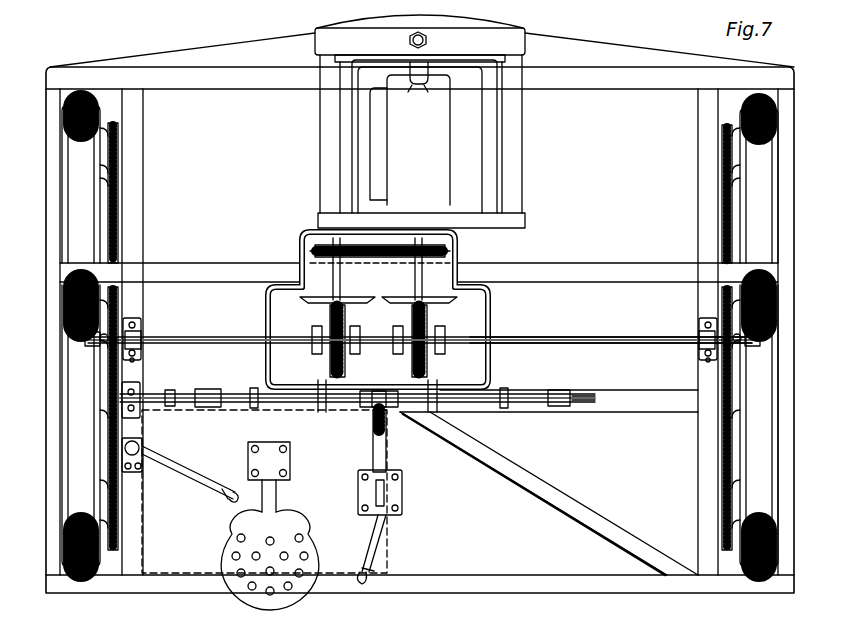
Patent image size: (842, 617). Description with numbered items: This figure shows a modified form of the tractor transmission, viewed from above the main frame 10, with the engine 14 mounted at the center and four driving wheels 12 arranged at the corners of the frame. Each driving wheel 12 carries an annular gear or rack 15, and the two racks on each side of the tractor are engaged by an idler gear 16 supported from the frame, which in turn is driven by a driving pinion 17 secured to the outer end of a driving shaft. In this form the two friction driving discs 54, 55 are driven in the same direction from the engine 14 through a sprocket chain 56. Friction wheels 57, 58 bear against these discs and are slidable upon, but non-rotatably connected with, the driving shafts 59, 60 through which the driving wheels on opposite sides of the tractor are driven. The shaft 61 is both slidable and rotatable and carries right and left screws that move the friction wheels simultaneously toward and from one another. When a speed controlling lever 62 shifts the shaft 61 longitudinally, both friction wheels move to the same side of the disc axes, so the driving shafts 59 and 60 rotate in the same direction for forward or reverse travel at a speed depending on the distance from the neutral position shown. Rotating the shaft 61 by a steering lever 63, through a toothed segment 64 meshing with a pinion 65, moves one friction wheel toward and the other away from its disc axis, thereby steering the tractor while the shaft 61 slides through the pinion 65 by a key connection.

The main frame 10 is at (606, 264).
The driving wheels 12 is at (70, 113).
The engine 14 is at (421, 141).
The annular gear or rack 15 is at (118, 175).
The idler gear 16 is at (112, 304).
The driving pinion 17 is at (125, 355).
The friction driving disc 54 is at (428, 284).
The friction driving disc 55 is at (315, 302).
The sprocket chain 56 is at (378, 256).
The friction wheel 57 is at (412, 359).
The friction wheel 58 is at (345, 359).
The driving shaft 59 is at (583, 335).
The driving shaft 60 is at (193, 334).
The sliding and rotatable shaft 61 is at (527, 396).
The speed controlling lever 62 is at (193, 480).
The steering lever 63 is at (372, 545).
The toothed segment 64 is at (403, 430).
The pinion 65 is at (360, 412).